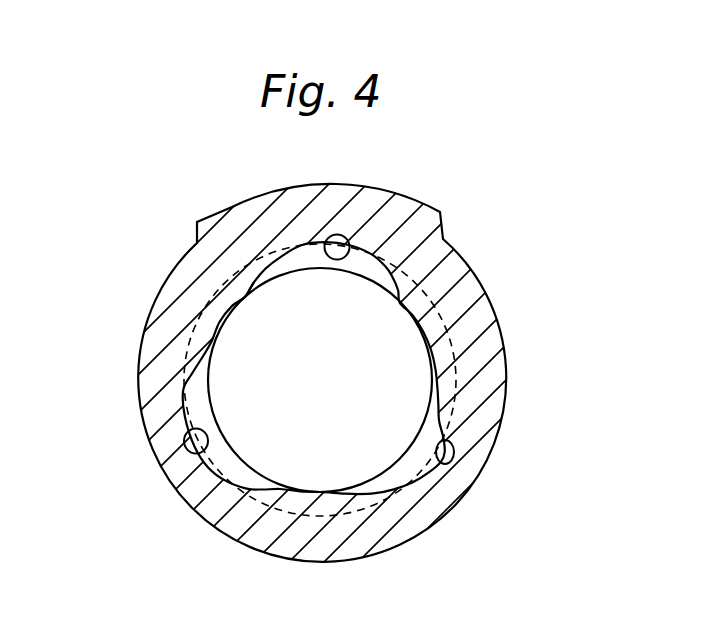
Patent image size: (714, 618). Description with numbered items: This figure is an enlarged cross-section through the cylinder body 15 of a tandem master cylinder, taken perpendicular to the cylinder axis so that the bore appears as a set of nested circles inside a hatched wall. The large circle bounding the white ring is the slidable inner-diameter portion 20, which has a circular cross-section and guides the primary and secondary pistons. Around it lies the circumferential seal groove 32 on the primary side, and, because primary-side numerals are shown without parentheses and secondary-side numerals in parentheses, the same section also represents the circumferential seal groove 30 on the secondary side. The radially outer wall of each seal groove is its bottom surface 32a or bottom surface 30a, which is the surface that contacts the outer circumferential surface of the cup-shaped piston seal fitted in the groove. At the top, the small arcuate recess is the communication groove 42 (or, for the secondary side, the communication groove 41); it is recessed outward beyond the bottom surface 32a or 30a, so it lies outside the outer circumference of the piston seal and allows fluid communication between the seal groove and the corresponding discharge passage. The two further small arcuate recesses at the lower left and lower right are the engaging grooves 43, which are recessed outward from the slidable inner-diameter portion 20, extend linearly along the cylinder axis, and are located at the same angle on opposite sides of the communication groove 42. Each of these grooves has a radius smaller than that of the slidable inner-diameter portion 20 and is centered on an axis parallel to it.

The cylinder body 15 is at (480, 275).
The slidable inner-diameter portion 20 is at (448, 332).
The circumferential seal groove 32 is at (314, 368).
The circumferential seal groove 30 is at (295, 268).
The bottom surface 32a is at (171, 244).
The bottom surface 30a is at (235, 279).
The communication groove 42 is at (436, 235).
The communication groove 41 is at (345, 241).
The engaging grooves 43 is at (186, 433).